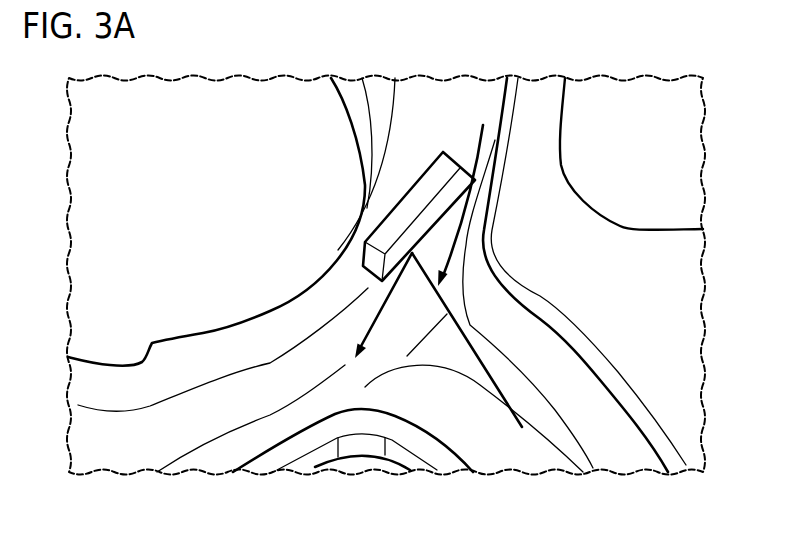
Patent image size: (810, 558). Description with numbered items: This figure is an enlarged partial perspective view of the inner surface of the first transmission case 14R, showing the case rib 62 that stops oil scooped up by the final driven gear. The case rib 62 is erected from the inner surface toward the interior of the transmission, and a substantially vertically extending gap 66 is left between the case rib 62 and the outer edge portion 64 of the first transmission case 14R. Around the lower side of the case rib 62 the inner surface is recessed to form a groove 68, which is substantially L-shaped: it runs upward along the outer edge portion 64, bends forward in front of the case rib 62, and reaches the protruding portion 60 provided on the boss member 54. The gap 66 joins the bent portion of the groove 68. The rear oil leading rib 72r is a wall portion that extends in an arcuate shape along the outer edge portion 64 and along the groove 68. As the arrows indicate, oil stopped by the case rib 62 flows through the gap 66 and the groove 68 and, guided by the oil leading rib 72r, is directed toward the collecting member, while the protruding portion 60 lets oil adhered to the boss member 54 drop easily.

The first transmission case 14R is at (688, 329).
The boss member 54 is at (202, 361).
The protruding portion 60 is at (108, 377).
The case rib 62 is at (434, 167).
The outer edge portion 64 is at (548, 138).
The gap 66 is at (473, 221).
The groove 68 is at (512, 457).
The oil leading rib 72r is at (357, 425).